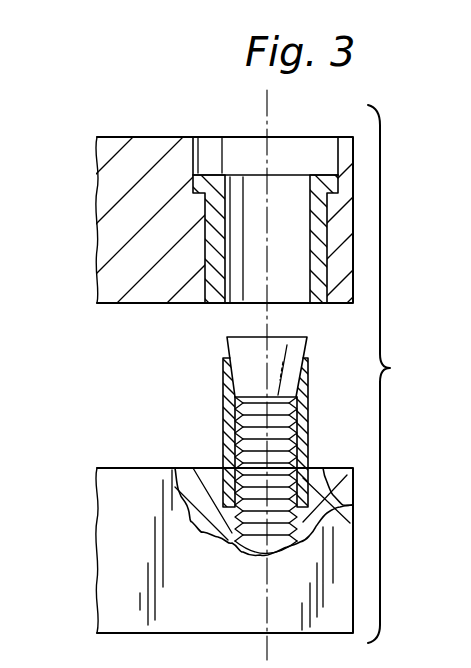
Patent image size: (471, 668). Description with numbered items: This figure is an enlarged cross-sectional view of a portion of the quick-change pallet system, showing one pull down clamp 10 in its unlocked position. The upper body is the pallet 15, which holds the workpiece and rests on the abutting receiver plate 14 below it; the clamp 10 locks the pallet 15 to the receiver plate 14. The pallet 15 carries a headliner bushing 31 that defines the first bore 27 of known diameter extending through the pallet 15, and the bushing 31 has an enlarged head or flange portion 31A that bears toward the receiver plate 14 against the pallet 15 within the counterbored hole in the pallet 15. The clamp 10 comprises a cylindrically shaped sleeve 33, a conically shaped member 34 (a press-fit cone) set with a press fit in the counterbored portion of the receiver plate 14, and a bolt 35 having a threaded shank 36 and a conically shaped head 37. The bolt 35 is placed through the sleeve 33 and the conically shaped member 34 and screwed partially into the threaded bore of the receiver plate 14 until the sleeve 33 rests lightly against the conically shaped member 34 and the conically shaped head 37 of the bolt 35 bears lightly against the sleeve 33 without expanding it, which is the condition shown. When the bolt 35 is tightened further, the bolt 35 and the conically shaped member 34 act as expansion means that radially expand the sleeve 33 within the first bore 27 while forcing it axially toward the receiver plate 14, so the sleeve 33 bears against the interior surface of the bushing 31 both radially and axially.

The clamp 10 is at (218, 504).
The receiver plate 14 is at (112, 592).
The pallet 15 is at (108, 245).
The first bore 27 is at (233, 148).
The bushing 31 is at (207, 215).
The flange portion 31A is at (212, 182).
The sleeve 33 is at (230, 402).
The conically shaped member 34 is at (225, 457).
The bolt 35 is at (221, 340).
The threaded shank 36 is at (323, 467).
The conically shaped head 37 is at (247, 365).